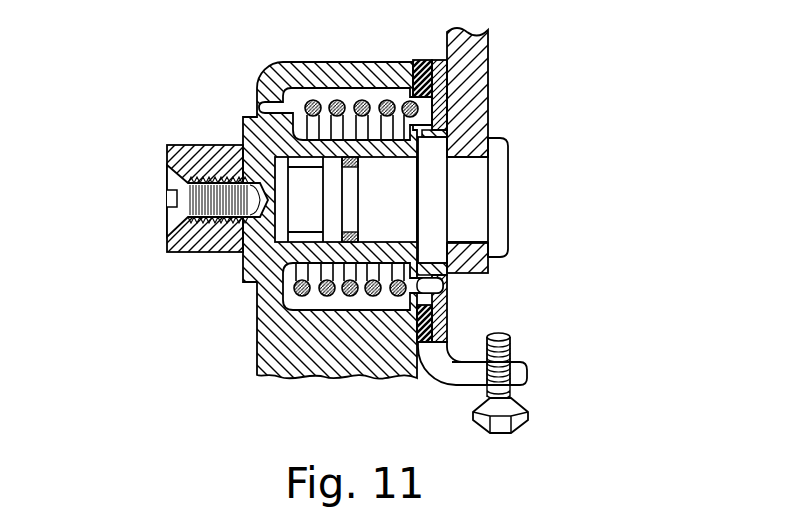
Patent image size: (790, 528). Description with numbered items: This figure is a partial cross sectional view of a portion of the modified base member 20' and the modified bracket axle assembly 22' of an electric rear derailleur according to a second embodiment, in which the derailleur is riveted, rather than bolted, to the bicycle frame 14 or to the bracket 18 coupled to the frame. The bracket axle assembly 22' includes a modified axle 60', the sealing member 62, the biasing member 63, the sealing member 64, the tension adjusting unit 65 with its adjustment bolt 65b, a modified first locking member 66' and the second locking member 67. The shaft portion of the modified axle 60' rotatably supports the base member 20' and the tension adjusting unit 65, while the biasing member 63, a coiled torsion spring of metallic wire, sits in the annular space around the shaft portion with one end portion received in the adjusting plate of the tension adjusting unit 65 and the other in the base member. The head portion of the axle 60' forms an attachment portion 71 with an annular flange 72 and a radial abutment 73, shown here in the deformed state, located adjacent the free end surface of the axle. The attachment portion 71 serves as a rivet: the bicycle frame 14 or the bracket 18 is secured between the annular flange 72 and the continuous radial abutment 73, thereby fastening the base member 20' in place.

The modified base member 20' is at (305, 239).
The modified bracket axle assembly 22' is at (170, 193).
The modified axle 60' is at (520, 199).
The second O-ring or sealing member 62 is at (346, 162).
The biasing member 63 is at (322, 296).
The third O-ring or sealing member 64 is at (425, 342).
The tension adjusting unit 65 is at (523, 380).
The adjustment bolt 65b is at (510, 341).
The modified first locking member 66' is at (180, 214).
The second locking member 67 is at (166, 178).
The attachment portion 71 is at (477, 177).
The annular flange 72 is at (433, 223).
The radial abutment 73 is at (500, 240).
The bicycle frame 14 is at (537, 150).
The bracket 18 is at (490, 98).